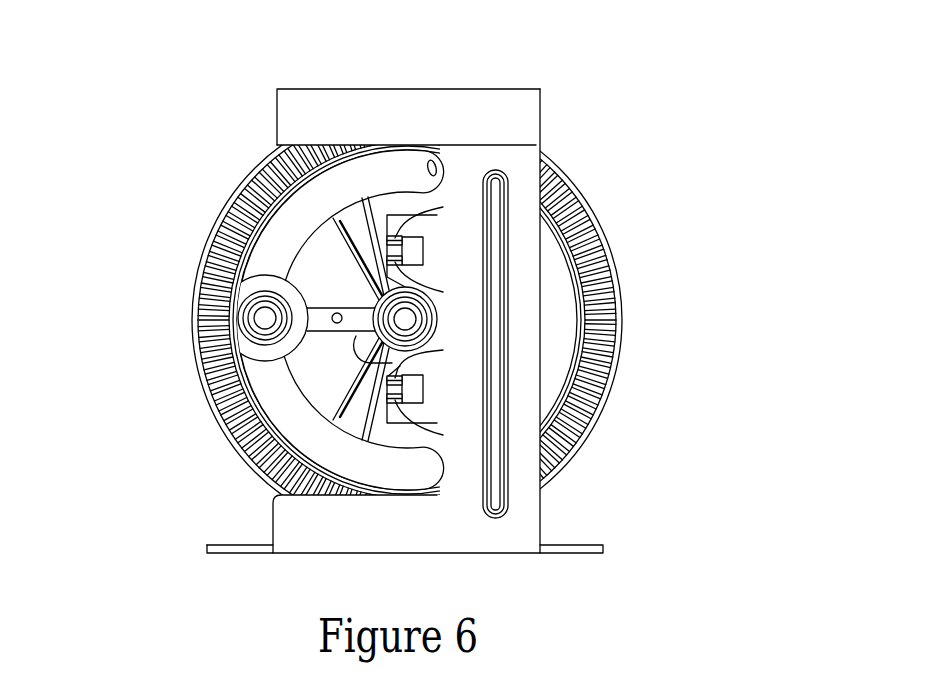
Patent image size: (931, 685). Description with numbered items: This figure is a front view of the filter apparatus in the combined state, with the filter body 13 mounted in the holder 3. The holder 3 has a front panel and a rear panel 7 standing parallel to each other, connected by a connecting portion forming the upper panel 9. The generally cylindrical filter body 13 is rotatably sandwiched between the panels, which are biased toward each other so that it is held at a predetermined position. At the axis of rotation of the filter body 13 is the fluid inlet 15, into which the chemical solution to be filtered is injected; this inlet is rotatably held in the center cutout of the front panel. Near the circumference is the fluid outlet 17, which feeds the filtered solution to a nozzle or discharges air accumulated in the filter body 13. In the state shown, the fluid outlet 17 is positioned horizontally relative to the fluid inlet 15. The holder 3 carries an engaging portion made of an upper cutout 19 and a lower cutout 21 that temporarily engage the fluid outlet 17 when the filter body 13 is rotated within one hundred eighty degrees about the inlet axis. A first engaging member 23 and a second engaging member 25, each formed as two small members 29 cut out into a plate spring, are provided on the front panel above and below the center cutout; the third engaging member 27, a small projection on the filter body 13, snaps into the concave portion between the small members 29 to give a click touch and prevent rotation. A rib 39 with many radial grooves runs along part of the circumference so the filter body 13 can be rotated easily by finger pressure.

The holder 3 is at (545, 124).
The rear panel 7 is at (273, 495).
The upper panel 9 is at (375, 118).
The filter body 13 is at (470, 320).
The fluid inlet 15 is at (413, 319).
The fluid outlet 17 is at (258, 322).
The upper cutout 19 is at (440, 182).
The lower cutout 21 is at (423, 473).
The first engaging member 23 is at (463, 265).
The second engaging member 25 is at (460, 404).
The third engaging member 27 is at (334, 316).
The small members 29 is at (437, 322).
The rib 39 is at (620, 314).